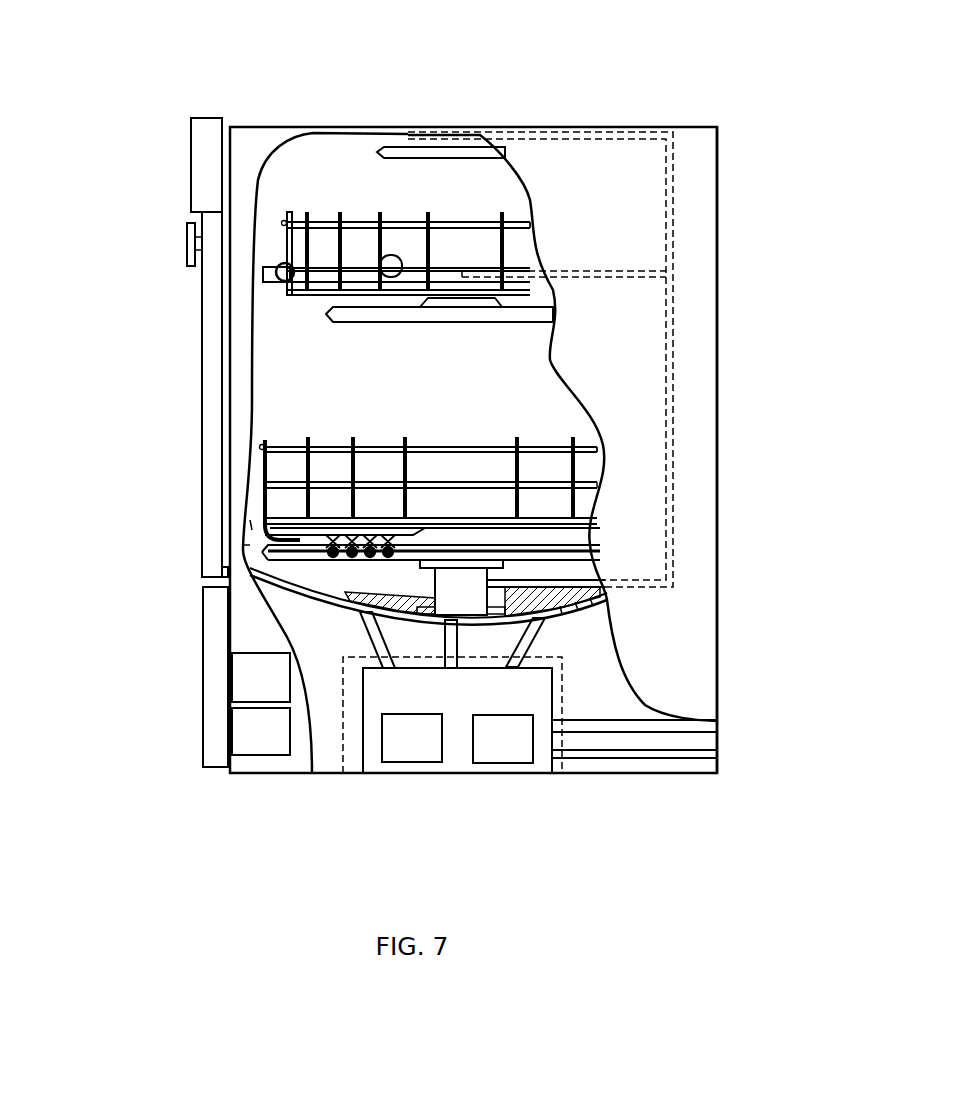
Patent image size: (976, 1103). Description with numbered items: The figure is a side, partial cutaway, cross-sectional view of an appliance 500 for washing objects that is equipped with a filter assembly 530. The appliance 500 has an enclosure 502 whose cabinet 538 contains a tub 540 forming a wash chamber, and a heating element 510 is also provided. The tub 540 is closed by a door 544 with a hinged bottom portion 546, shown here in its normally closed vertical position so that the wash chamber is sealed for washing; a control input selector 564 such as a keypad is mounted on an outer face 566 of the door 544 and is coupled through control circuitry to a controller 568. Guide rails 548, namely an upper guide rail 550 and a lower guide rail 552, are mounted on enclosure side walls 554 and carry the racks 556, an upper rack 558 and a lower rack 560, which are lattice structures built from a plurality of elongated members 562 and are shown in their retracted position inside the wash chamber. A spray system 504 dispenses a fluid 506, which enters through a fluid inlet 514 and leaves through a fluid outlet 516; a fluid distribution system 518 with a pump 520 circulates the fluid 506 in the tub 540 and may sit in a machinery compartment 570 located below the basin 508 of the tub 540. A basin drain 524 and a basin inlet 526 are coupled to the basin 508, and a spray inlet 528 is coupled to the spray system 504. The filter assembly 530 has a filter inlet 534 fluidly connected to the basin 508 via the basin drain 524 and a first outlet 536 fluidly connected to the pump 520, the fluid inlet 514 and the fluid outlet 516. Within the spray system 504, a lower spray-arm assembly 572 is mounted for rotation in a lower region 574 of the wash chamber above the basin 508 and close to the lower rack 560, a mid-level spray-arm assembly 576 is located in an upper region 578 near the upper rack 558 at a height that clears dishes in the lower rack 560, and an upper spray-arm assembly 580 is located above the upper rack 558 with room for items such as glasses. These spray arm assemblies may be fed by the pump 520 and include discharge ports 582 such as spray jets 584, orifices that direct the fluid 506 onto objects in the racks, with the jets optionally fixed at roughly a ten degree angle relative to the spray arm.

The appliance 500 is at (630, 85).
The enclosure 502 is at (718, 388).
The spray system 504 is at (365, 648).
The fluid 506 is at (445, 562).
The basin 508 is at (588, 612).
The heating element 510 is at (520, 598).
The fluid inlet 514 is at (730, 725).
The fluid outlet 516 is at (730, 757).
The fluid distribution system 518 is at (340, 716).
The pump 520 is at (457, 720).
The basin drain 524 is at (448, 652).
The basin inlet 526 is at (536, 648).
The spray inlet 528 is at (462, 650).
The filter assembly 530 is at (412, 738).
The filter inlet 534 is at (375, 767).
The first outlet 536 is at (447, 767).
The cabinet 538 is at (703, 243).
The tub 540 is at (431, 415).
The door 544 is at (248, 528).
The hinged bottom portion 546 is at (205, 587).
The guide rails 548 is at (283, 307).
The upper guide rail 550 is at (268, 283).
The lower guide rail 552 is at (235, 565).
The enclosure side walls 554 is at (258, 140).
The racks 556 is at (548, 237).
The upper rack 558 is at (398, 215).
The lower rack 560 is at (322, 438).
The elongated members 562 is at (377, 517).
The control input selector 564 is at (195, 265).
The outer face 566 is at (202, 372).
The controller 568 is at (261, 677).
The machinery compartment 570 is at (261, 731).
The lower spray-arm assembly 572 is at (560, 540).
The lower region 574 is at (630, 472).
The mid-level spray-arm assembly 576 is at (405, 322).
The upper region 578 is at (630, 290).
The upper spray-arm assembly 580 is at (405, 145).
The discharge ports 582 is at (307, 533).
The spray jets 584 is at (345, 560).